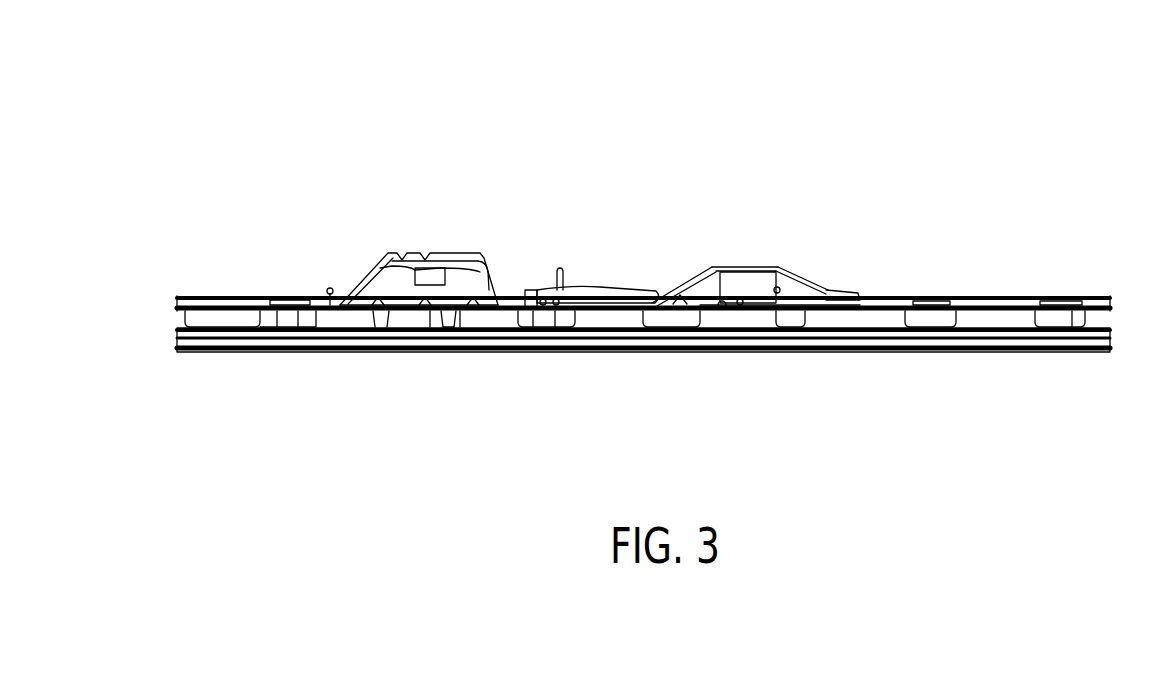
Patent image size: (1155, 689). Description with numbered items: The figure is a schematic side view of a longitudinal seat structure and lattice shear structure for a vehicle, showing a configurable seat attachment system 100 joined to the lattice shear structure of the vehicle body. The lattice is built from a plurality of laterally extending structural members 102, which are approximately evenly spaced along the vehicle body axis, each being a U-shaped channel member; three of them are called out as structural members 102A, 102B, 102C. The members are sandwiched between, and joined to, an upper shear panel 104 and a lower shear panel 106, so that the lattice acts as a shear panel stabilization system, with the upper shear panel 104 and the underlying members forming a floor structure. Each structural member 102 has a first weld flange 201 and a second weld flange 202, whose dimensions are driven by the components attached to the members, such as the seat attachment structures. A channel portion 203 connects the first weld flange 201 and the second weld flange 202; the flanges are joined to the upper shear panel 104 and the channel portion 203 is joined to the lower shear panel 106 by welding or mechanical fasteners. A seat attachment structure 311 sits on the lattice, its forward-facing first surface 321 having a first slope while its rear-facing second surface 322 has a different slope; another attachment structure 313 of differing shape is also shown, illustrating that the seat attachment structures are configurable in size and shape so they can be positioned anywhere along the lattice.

The configurable seat attachment system 100 is at (160, 106).
The structural member 102 is at (673, 327).
The structural member 102A is at (267, 333).
The structural member 102B is at (445, 323).
The structural member 102C is at (518, 330).
The upper shear panel 104 is at (1010, 298).
The lower shear panel 106 is at (1000, 338).
The first weld flange 201 is at (376, 323).
The second weld flange 202 is at (453, 325).
The channel portion 203 is at (418, 325).
The seat attachment structure 311 is at (408, 263).
The second bracket 313 is at (752, 285).
The first surface 321 is at (352, 264).
The second surface 322 is at (492, 262).